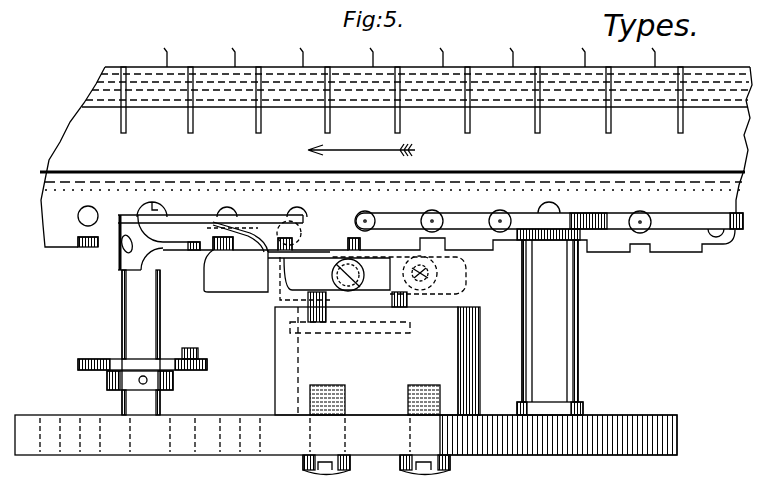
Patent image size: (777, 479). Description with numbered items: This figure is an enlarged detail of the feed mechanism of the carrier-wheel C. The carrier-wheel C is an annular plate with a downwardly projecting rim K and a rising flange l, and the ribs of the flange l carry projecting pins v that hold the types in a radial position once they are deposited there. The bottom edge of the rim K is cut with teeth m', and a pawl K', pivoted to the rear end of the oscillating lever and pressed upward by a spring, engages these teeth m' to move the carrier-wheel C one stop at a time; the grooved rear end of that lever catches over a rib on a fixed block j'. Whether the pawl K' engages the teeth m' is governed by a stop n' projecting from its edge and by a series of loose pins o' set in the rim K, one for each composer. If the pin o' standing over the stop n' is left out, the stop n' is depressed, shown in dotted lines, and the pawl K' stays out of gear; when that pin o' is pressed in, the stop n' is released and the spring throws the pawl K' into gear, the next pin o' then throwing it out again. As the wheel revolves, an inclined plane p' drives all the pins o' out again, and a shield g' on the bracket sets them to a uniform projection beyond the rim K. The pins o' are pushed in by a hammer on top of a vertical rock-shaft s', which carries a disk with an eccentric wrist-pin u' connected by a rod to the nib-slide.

The projecting pins v is at (408, 50).
The rising flange l is at (402, 100).
The carrier-wheel C is at (396, 157).
The rim K is at (549, 301).
The loose pins o' is at (475, 216).
The shield g' is at (436, 251).
The teeth m' is at (406, 229).
The stop n' is at (237, 236).
The pawl K' is at (335, 275).
The vertical rock-shaft s' is at (212, 308).
The inclined plane p' is at (142, 368).
The eccentric wrist-pin u' is at (190, 346).
The fixed block j' is at (377, 353).